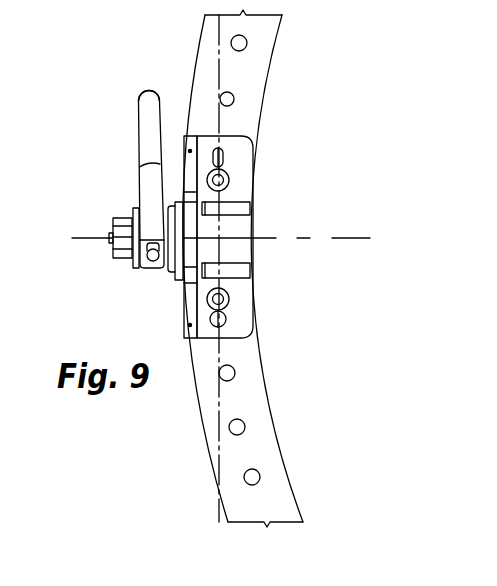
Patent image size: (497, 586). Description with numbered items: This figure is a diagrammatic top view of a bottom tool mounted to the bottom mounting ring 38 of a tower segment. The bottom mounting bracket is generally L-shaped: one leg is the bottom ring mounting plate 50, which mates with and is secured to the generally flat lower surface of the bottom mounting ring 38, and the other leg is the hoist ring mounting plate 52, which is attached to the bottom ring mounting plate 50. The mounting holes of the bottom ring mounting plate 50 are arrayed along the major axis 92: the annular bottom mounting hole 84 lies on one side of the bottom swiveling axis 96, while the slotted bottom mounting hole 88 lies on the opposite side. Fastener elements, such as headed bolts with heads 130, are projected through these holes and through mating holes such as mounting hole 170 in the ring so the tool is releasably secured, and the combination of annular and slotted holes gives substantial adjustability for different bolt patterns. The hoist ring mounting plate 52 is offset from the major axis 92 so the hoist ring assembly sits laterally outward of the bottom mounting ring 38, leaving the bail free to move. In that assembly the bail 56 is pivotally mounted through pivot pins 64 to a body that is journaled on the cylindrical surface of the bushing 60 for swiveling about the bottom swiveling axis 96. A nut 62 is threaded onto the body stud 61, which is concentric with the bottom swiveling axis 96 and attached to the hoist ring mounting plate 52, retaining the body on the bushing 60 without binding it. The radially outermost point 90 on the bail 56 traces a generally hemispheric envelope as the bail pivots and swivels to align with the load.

The bottom mounting ring 38 is at (268, 82).
The mounting hole 170 is at (234, 99).
The major axis 92 is at (220, 400).
The bottom ring mounting plate 50 is at (253, 192).
The hoist ring mounting plate 52 is at (189, 136).
The slotted bottom mounting hole 88 is at (225, 156).
The head 130 is at (230, 177).
The bottom mounting hole 84 is at (227, 318).
The bottom swiveling axis 96 is at (302, 238).
The bail 56 is at (137, 125).
The radially outermost point 90 is at (147, 94).
The pivot pin 64 is at (155, 270).
The bushing 60 is at (177, 273).
The nut 62 is at (115, 219).
The body stud 61 is at (112, 228).